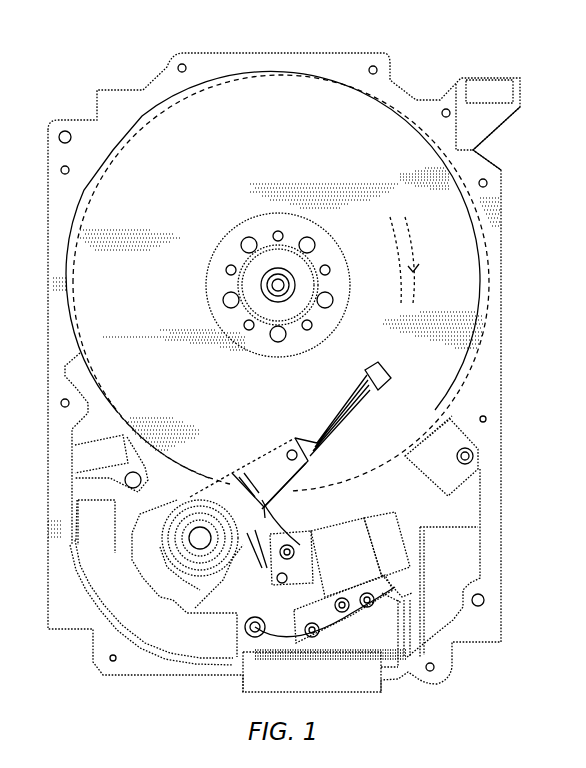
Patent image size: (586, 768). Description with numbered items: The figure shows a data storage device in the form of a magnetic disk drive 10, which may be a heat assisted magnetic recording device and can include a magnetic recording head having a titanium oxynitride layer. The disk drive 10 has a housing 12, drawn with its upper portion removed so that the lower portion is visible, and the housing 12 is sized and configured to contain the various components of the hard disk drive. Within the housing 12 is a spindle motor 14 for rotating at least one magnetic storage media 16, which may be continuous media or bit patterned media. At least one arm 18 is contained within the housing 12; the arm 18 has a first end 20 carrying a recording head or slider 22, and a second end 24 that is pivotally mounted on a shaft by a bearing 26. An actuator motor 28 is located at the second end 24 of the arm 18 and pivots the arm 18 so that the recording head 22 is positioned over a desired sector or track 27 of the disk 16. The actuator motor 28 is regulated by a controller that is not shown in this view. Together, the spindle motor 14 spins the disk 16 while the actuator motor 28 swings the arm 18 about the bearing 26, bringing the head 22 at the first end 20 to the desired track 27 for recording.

The disk drive 10 is at (80, 79).
The housing 12 is at (360, 60).
The spindle motor 14 is at (262, 287).
The magnetic storage media 16 is at (281, 283).
The arm 18 is at (274, 462).
The first end 20 is at (343, 398).
The recording head 22 is at (386, 370).
The second end 24 is at (213, 497).
The bearing 26 is at (194, 526).
The track 27 is at (424, 268).
The actuator motor 28 is at (156, 582).